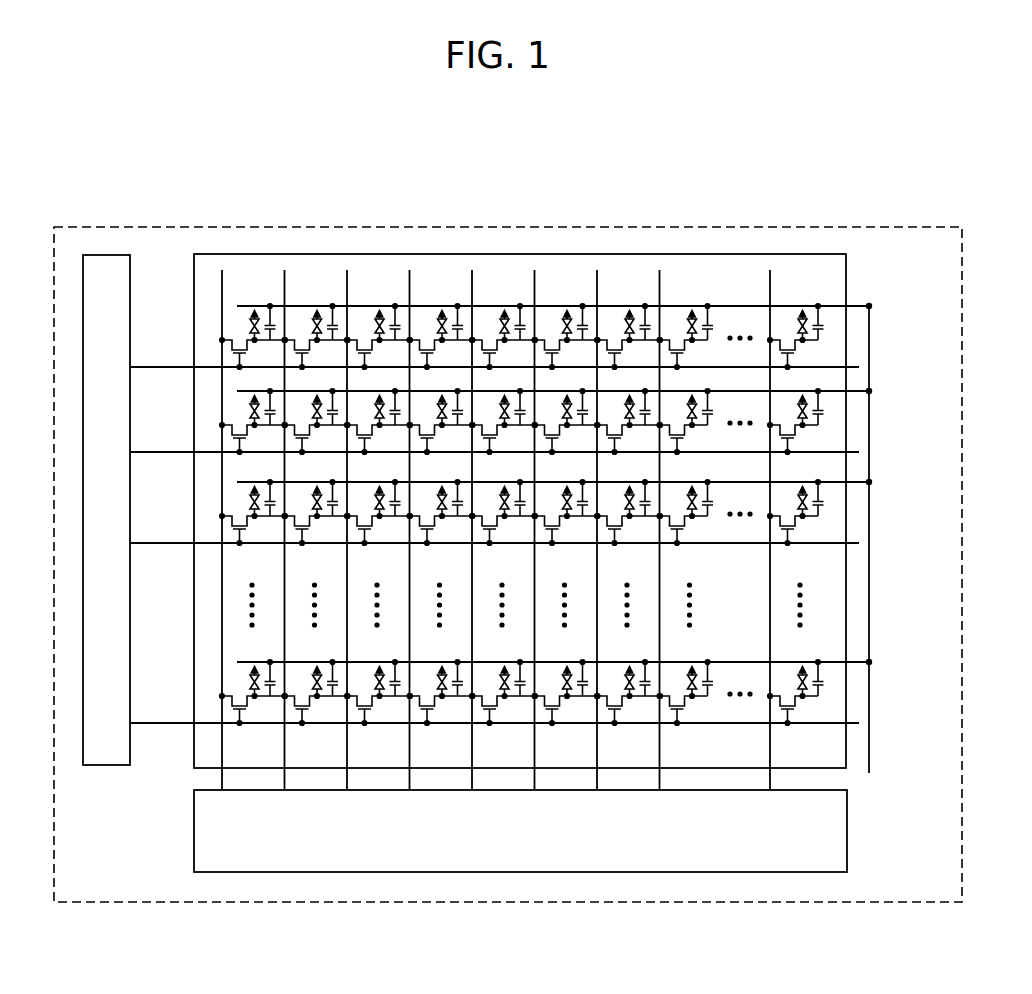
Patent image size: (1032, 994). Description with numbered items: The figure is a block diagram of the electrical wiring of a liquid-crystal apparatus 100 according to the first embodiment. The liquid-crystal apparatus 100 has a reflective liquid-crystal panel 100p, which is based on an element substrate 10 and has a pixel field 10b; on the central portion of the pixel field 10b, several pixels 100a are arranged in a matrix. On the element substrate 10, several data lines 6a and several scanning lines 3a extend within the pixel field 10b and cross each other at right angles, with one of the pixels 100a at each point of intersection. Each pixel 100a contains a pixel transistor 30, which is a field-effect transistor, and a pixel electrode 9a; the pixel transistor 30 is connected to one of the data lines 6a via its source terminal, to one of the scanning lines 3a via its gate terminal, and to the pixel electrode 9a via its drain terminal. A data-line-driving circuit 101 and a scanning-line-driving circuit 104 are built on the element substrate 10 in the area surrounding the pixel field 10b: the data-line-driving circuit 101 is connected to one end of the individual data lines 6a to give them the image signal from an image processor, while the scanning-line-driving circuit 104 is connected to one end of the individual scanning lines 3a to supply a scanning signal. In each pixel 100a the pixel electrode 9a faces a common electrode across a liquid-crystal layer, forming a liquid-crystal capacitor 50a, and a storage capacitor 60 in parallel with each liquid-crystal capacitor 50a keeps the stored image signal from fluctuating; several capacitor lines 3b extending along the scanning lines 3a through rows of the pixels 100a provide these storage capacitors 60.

The element substrate 10 is at (508, 516).
The reflective liquid-crystal panel 100p is at (498, 227).
The liquid-crystal apparatus 100 is at (532, 501).
The pixel field 10b is at (613, 253).
The scanning-line-driving circuit 104 is at (108, 254).
The data-line-driving circuit 101 is at (848, 832).
The data line 6a is at (410, 283).
The scanning line 3a is at (753, 367).
The capacitor line 3b is at (723, 305).
The pixel electrode 9a is at (254, 361).
The pixel transistor 30 is at (237, 333).
The liquid-crystal capacitor 50a is at (252, 310).
The storage capacitor 60 is at (270, 306).
The pixel 100a is at (300, 296).